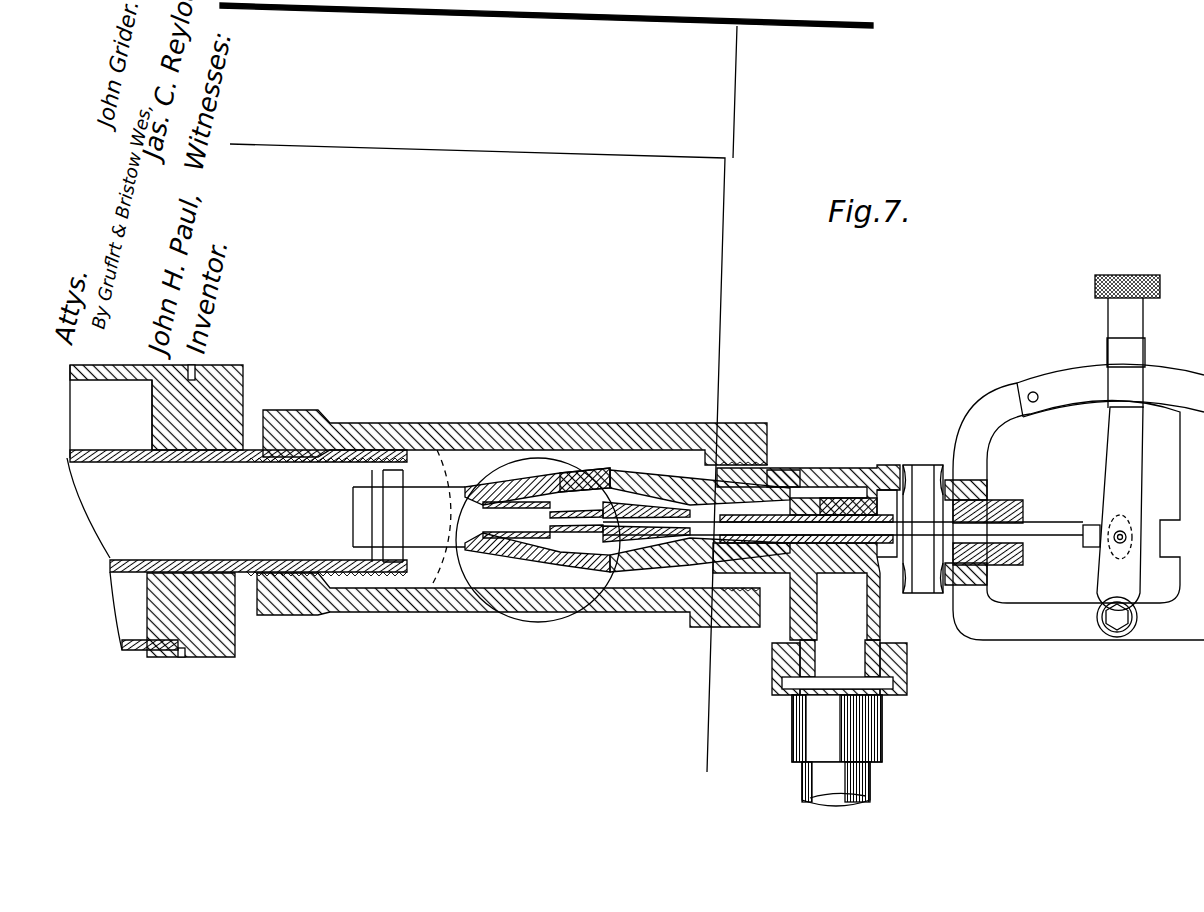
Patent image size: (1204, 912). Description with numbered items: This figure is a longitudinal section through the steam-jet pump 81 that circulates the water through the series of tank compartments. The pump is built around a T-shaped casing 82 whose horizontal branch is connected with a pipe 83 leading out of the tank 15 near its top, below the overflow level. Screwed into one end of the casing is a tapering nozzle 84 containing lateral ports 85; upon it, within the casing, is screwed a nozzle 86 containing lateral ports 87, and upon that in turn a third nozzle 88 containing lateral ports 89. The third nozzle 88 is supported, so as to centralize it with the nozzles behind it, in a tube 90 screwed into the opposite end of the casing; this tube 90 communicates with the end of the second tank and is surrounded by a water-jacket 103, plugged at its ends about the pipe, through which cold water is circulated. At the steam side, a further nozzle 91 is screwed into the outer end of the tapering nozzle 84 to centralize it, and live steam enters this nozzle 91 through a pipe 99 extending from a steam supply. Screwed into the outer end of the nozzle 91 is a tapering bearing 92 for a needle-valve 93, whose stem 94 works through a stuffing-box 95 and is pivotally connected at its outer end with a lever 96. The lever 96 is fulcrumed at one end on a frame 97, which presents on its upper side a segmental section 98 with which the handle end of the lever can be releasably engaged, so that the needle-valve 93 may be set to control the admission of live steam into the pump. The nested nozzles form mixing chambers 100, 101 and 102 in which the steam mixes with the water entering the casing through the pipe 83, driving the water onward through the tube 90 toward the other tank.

The tank 15 is at (546, 387).
The steam-jet pump 81 is at (490, 478).
The T-shaped casing 82 is at (590, 432).
The pipe 83 is at (494, 476).
The tapering nozzle 84 is at (780, 478).
The lateral ports 85 is at (707, 600).
The nozzle 86 is at (637, 575).
The lateral ports 87 is at (613, 565).
The third nozzle 88 is at (490, 547).
The lateral ports 89 is at (537, 557).
The tube 90 is at (242, 580).
The nozzle 91 is at (813, 484).
The tapering bearing 92 is at (840, 510).
The needle-valve 93 is at (696, 500).
The stem 94 is at (847, 530).
The stuffing-box 95 is at (1007, 505).
The lever 96 is at (1120, 580).
The frame 97 is at (1037, 627).
The segmental section 98 is at (1163, 378).
The pipe 99 is at (855, 780).
The mixing chamber 100 is at (733, 493).
The mixing chamber 101 is at (620, 495).
The mixing chamber 102 is at (530, 497).
The water-jacket 103 is at (133, 648).